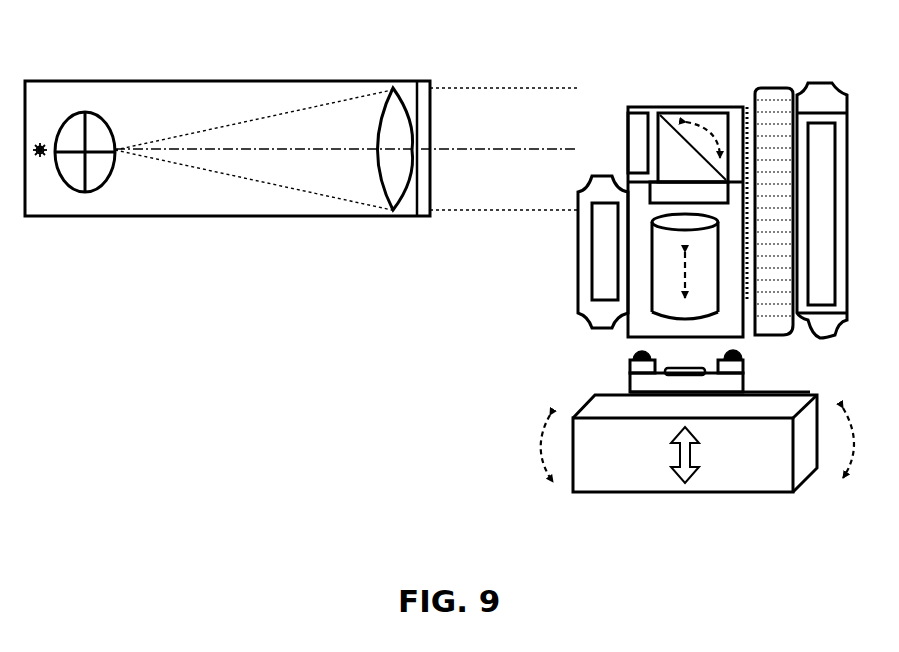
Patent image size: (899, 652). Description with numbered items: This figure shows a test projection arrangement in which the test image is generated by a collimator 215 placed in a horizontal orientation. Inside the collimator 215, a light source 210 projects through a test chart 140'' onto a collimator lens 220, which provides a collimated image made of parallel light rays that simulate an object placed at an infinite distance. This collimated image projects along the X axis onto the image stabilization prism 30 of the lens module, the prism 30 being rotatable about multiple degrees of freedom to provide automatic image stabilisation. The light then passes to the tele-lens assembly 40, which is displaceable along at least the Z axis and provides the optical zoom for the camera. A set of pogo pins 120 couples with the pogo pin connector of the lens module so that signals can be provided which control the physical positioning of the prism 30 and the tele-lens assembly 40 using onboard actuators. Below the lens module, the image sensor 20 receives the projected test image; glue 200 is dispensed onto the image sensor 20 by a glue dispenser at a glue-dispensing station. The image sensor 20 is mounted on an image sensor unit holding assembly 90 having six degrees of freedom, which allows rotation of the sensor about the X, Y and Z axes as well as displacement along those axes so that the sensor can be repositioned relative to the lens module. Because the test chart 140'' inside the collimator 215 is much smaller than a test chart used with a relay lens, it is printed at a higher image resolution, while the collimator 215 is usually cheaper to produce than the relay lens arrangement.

The collimator 215 is at (186, 80).
The light source 210 is at (40, 160).
The test chart 140'' is at (107, 200).
The collimator lens 220 is at (373, 186).
The prism 30 is at (655, 133).
The set of pogo pins 120 is at (750, 110).
The tele-lens assembly 40 is at (652, 224).
The image sensor 20 is at (662, 372).
The glue 200 is at (752, 361).
The image sensor unit holding assembly 90 is at (686, 494).